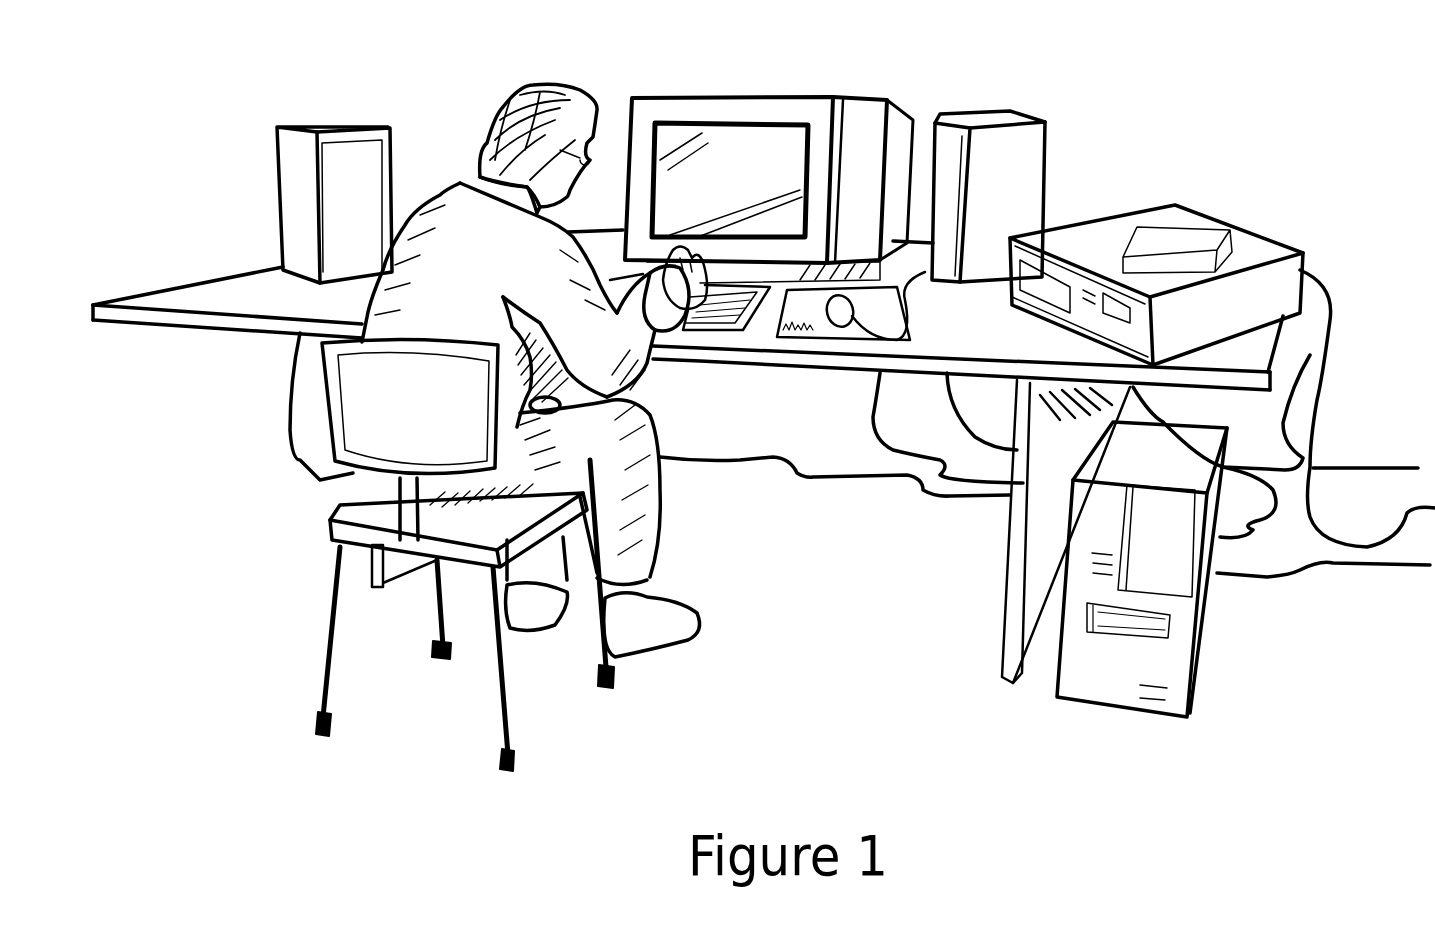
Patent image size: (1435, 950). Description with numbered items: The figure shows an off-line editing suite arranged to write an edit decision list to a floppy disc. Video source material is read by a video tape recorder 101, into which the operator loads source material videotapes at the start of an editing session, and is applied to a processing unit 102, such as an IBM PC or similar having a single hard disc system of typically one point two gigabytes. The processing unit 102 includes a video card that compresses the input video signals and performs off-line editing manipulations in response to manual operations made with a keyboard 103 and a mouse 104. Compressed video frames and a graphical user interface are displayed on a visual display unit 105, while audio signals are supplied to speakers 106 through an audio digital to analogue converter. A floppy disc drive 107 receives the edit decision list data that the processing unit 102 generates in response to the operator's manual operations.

The video tape recorder 101 is at (1252, 250).
The processing unit 102 is at (1156, 630).
The keyboard 103 is at (717, 300).
The mouse 104 is at (847, 323).
The visual display unit 105 is at (858, 133).
The speakers 106 is at (1025, 178).
The floppy disc drive 107 is at (1103, 620).